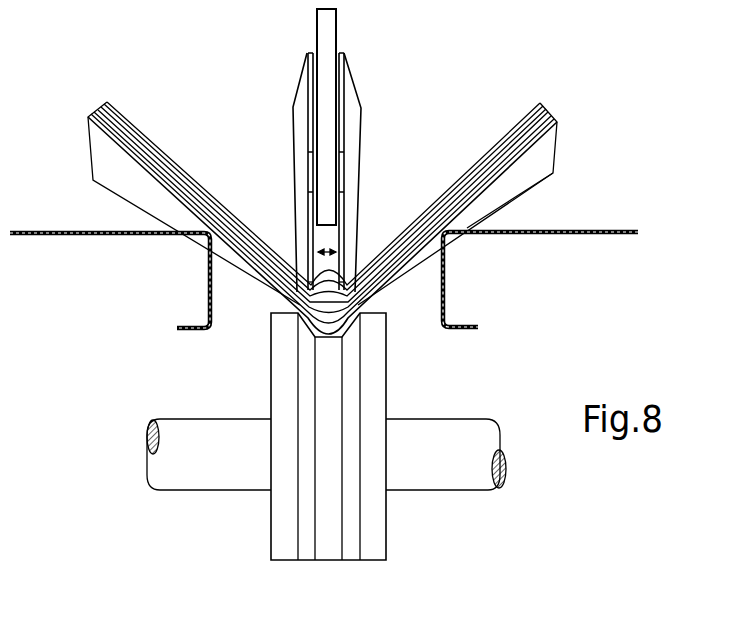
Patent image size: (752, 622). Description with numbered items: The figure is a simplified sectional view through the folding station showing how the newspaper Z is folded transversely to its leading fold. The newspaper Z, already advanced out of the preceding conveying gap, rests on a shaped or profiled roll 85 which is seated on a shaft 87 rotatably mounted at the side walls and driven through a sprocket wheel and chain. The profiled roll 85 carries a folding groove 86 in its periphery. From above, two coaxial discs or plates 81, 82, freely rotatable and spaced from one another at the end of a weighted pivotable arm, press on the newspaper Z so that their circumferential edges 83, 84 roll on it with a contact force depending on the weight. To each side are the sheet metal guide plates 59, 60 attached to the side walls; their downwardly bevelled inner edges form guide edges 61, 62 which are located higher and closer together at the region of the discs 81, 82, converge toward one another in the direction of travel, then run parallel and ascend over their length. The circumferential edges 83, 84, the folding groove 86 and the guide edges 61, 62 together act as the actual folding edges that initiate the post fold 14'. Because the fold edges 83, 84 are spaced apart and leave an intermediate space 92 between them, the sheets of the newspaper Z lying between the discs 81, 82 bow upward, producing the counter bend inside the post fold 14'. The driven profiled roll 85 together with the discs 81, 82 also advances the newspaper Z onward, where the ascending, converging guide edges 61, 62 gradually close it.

The post fold 14' is at (322, 241).
The guide plate 59 is at (543, 233).
The guide plate 60 is at (115, 240).
The guide edge 61 is at (433, 233).
The guide edge 62 is at (207, 232).
The disc 81 is at (352, 108).
The disc 82 is at (302, 107).
The circumferential edge 83 is at (350, 290).
The circumferential edge 84 is at (312, 287).
The profiled roll 85 is at (372, 360).
The folding groove 86 is at (333, 405).
The shaft 87 is at (462, 430).
The intermediate space 92 is at (327, 243).
The newspaper Z is at (445, 190).